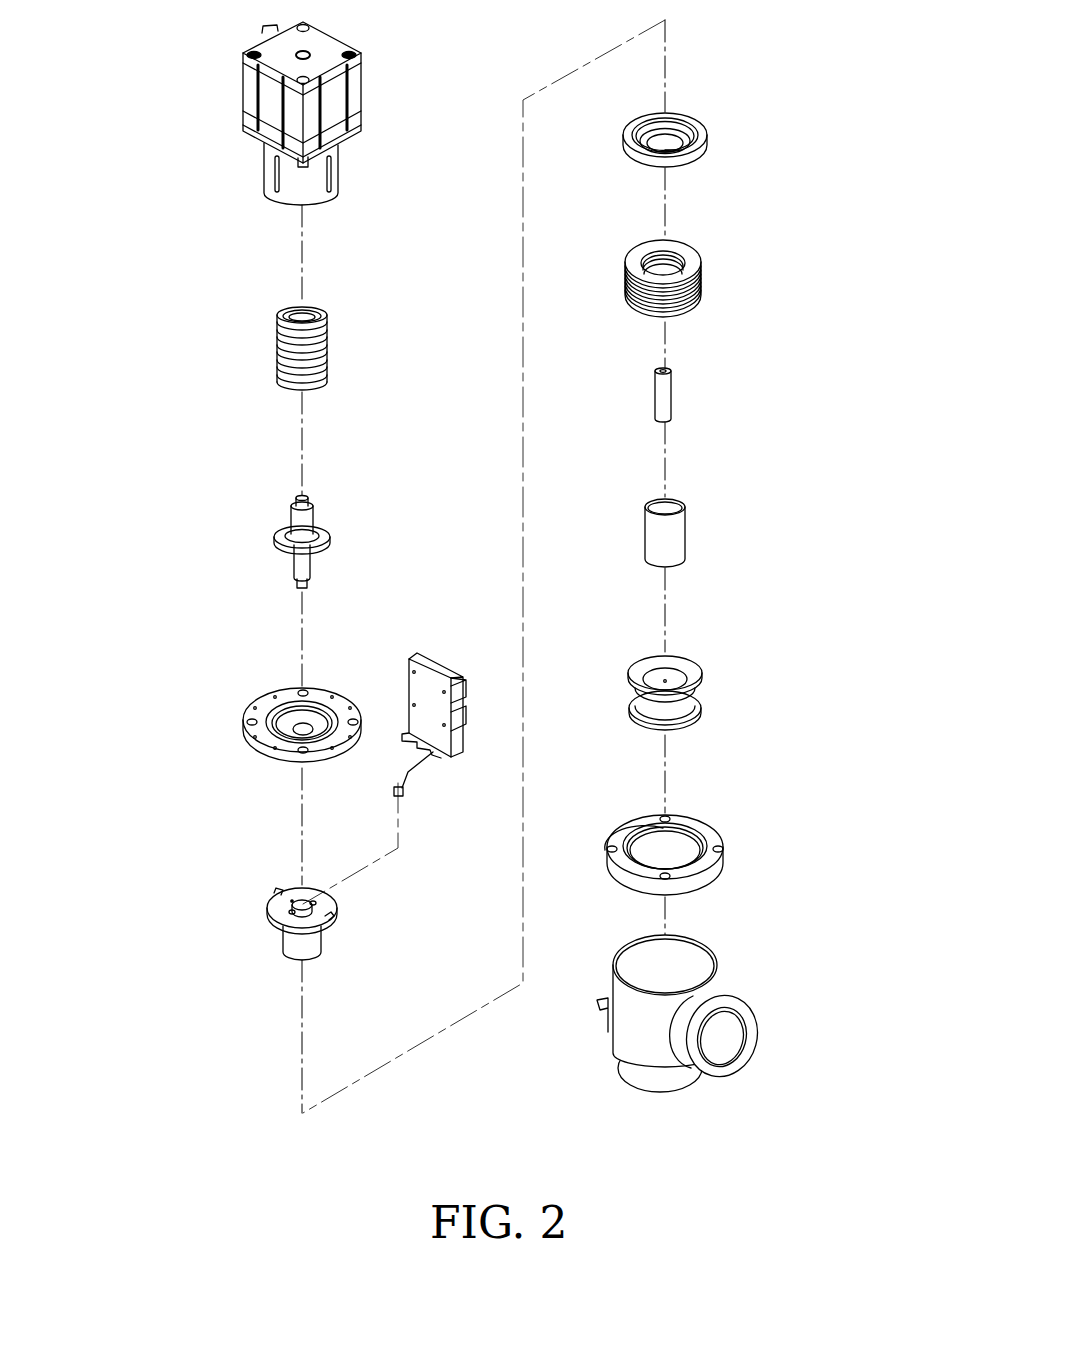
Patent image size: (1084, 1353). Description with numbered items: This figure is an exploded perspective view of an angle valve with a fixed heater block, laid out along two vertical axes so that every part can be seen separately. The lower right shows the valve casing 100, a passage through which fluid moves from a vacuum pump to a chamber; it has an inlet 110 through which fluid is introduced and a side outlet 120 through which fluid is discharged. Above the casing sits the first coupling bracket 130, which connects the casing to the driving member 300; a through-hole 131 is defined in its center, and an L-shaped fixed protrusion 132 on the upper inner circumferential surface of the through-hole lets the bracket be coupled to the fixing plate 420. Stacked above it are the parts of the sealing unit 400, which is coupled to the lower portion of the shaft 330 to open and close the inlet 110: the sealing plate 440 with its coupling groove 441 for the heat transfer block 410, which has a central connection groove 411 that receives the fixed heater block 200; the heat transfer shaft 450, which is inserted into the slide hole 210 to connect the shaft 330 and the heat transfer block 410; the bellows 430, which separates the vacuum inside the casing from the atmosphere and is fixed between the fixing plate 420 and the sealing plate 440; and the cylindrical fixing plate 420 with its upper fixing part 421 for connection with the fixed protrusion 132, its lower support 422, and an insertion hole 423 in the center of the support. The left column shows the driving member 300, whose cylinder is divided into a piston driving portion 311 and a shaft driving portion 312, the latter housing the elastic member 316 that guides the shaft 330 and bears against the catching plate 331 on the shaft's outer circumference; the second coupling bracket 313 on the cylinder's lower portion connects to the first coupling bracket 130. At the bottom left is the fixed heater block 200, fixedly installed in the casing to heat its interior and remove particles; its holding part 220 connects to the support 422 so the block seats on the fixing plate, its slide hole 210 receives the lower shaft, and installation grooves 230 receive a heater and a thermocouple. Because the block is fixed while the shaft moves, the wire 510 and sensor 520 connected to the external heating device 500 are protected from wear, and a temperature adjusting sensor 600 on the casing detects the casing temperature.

The valve casing 100 is at (674, 1015).
The inlet 110 is at (640, 1080).
The outlet 120 is at (747, 1007).
The first coupling bracket 130 is at (708, 839).
The through-hole 131 is at (663, 852).
The fixed protrusion 132 is at (705, 843).
The fixed heater block 200 is at (193, 843).
The slide hole 210 is at (288, 888).
The holding part 220 is at (285, 930).
The installation grooves 230 is at (272, 906).
The driving member 300 is at (152, 100).
The piston driving portion 311 is at (243, 93).
The shaft driving portion 312 is at (262, 162).
The second coupling bracket 313 is at (255, 710).
The elastic member 316 is at (278, 340).
The shaft 330 is at (293, 513).
The catching plate 331 is at (276, 538).
The sealing unit 400 is at (868, 660).
The heat transfer block 410 is at (754, 491).
The connection groove 411 is at (665, 512).
The fixing plate 420 is at (800, 138).
The fixing part 421 is at (703, 133).
The support 422 is at (693, 147).
The insertion hole 423 is at (680, 150).
The bellows 430 is at (693, 260).
The sealing plate 440 is at (746, 644).
The coupling groove 441 is at (665, 680).
The heat transfer shaft 450 is at (670, 393).
The heating device 500 is at (425, 718).
The wire 510 is at (418, 765).
The sensor 520 is at (400, 787).
The temperature adjusting sensor 600 is at (603, 1000).